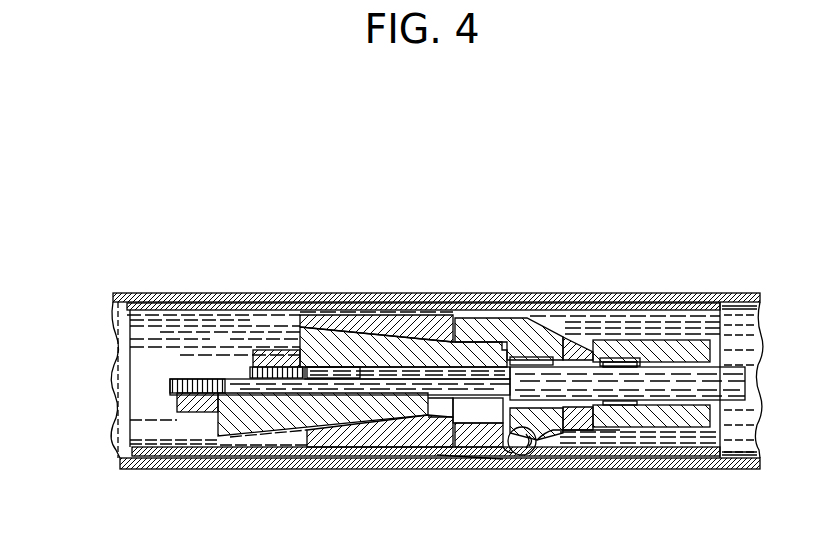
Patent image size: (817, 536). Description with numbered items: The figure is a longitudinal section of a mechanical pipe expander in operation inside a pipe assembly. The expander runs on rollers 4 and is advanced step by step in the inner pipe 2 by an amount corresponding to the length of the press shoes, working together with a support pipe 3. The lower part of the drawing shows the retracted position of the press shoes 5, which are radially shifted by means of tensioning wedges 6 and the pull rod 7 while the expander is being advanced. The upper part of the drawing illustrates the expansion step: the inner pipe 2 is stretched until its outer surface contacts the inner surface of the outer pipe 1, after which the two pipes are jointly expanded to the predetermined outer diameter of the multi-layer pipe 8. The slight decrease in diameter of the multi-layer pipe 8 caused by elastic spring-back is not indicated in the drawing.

The outer pipe 1 is at (141, 297).
The inner pipe 2 is at (140, 433).
The support pipe 3 is at (616, 352).
The rollers 4 is at (527, 447).
The press shoes 5 is at (363, 430).
The tensioning wedges 6 is at (229, 398).
The pull rod 7 is at (385, 368).
The multi-layer pipe 8 is at (693, 302).